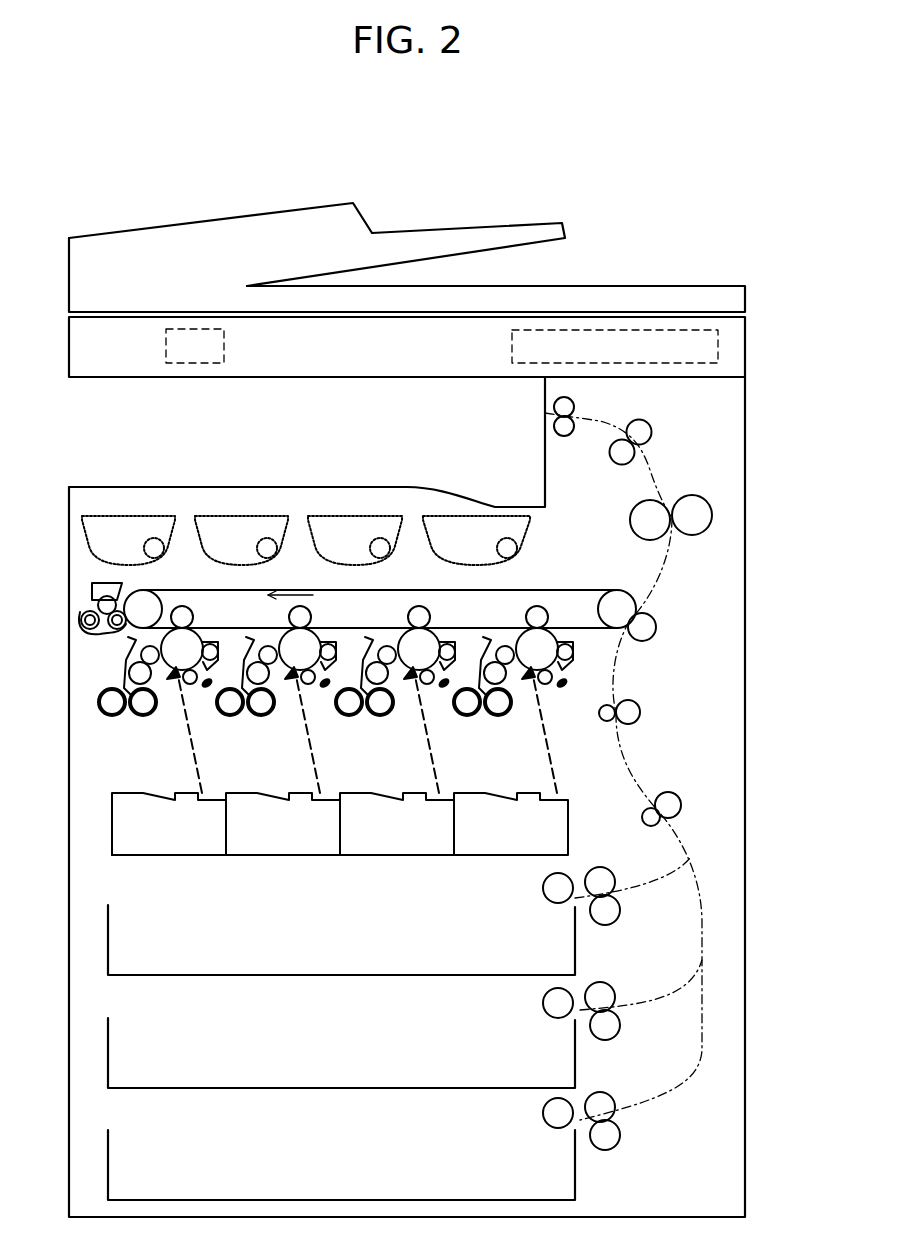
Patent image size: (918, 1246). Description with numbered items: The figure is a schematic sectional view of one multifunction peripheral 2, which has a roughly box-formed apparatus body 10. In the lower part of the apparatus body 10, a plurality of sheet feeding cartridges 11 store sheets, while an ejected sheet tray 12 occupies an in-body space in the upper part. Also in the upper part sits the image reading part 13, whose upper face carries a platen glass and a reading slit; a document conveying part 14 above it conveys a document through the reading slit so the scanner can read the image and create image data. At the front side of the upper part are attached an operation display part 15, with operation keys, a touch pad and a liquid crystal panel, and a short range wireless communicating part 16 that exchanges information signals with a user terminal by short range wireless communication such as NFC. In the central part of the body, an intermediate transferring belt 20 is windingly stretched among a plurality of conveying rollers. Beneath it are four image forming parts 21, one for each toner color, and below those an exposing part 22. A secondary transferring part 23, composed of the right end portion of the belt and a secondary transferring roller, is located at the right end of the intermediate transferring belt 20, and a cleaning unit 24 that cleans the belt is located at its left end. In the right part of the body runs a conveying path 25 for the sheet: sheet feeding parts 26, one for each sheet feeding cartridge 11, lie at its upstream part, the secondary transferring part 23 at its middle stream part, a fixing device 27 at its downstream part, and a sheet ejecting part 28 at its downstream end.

The multifunction peripheral 2 is at (72, 150).
The apparatus body 10 is at (69, 555).
The sheet feeding cartridge 11 is at (108, 937).
The ejected sheet tray 12 is at (210, 487).
The image reading part 13 is at (100, 317).
The document conveying part 14 is at (247, 215).
The operation display part 15 is at (722, 348).
The short range wireless communicating part 16 is at (228, 354).
The intermediate transferring belt 20 is at (552, 590).
The image forming part 21 is at (165, 714).
The exposing part 22 is at (103, 844).
The secondary transferring part 23 is at (666, 639).
The cleaning unit 24 is at (88, 606).
The conveying path 25 is at (617, 665).
The sheet feeding part 26 is at (626, 912).
The fixing device 27 is at (686, 541).
The sheet ejecting part 28 is at (587, 408).